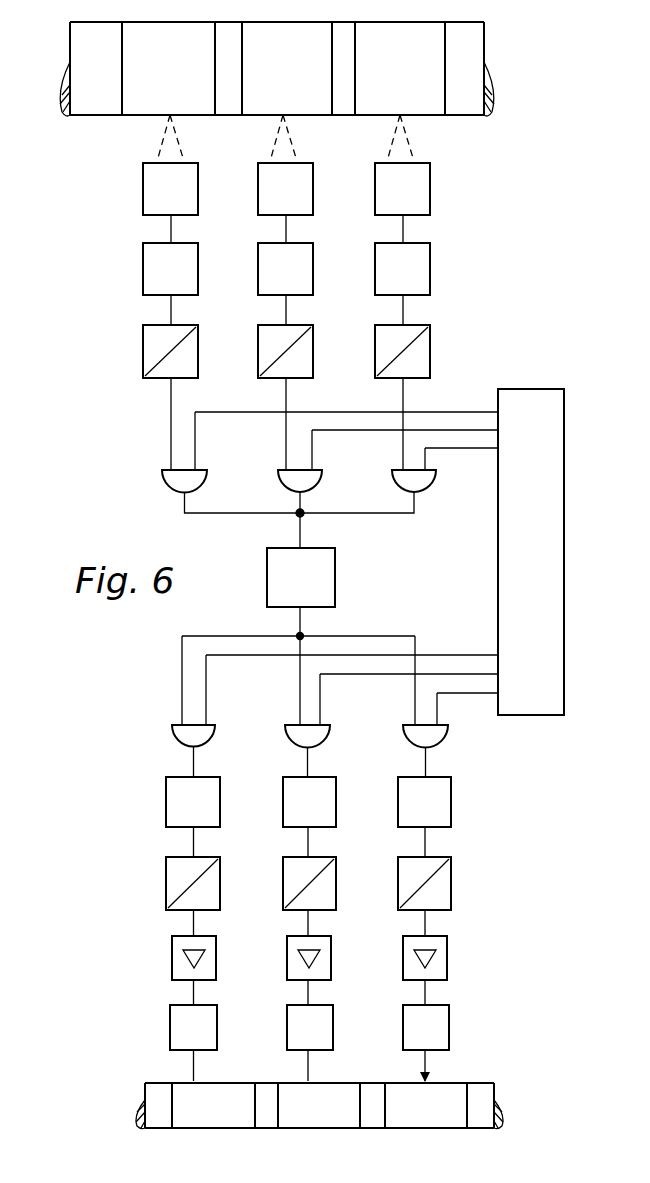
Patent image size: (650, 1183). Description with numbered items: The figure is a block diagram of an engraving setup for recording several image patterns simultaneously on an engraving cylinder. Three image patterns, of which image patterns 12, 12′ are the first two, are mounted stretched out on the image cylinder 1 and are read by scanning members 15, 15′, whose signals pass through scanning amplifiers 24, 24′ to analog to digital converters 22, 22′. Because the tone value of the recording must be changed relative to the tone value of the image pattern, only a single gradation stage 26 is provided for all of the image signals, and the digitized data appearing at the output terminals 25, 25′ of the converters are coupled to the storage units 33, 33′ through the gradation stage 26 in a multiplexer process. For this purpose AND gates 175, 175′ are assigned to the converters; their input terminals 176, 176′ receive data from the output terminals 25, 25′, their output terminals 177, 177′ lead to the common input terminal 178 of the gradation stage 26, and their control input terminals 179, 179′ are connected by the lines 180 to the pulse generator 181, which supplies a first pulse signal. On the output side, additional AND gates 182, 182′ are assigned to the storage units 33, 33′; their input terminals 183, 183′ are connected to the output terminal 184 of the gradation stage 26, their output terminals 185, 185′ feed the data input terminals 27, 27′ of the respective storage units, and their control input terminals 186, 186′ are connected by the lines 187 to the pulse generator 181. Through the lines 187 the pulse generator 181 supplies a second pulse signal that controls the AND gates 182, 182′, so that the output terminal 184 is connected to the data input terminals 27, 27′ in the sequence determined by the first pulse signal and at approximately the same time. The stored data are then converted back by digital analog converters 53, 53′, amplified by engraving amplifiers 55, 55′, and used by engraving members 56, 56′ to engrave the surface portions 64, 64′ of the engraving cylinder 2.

The image cylinder 1 is at (82, 40).
The image pattern 12 is at (143, 108).
The image pattern 12′ is at (281, 108).
The scanning member 15 is at (150, 181).
The scanning member 15′ is at (266, 181).
The scanning amplifier 24 is at (150, 263).
The scanning amplifier 24′ is at (266, 263).
The analog to digital converter 22 is at (150, 356).
The analog to digital converter 22′ is at (264, 356).
The output terminal 25 is at (171, 384).
The output terminal 25′ is at (286, 384).
The AND gate 175 is at (163, 480).
The AND gate 175′ is at (290, 488).
The input terminal 176 is at (171, 462).
The input terminal 176′ is at (286, 464).
The output terminal 177 is at (183, 500).
The output terminal 177′ is at (310, 494).
The control input terminal 179 is at (198, 462).
The control input terminal 179′ is at (313, 465).
The lines 180 is at (471, 432).
The pulse generator 181 is at (516, 402).
The input terminal 178 is at (298, 545).
The gradation stage 26 is at (328, 568).
The output terminal 184 is at (305, 611).
The lines 187 is at (478, 690).
The AND gate 182 is at (178, 735).
The AND gate 182′ is at (292, 738).
The input terminal 183 is at (180, 716).
The input terminal 183′ is at (299, 718).
The control input terminal 186 is at (206, 718).
The control input terminal 186′ is at (320, 718).
The output terminal 185 is at (190, 752).
The output terminal 185′ is at (305, 753).
The data input terminal 27 is at (190, 768).
The data input terminal 27′ is at (310, 771).
The storage unit 33 is at (174, 808).
The storage unit 33′ is at (290, 801).
The digital analog converter 53 is at (170, 866).
The digital analog converter 53′ is at (286, 862).
The engraving amplifier 55 is at (176, 948).
The engraving amplifier 55′ is at (296, 955).
The engraving member 56 is at (178, 1022).
The engraving member 56′ is at (292, 1020).
The engraving cylinder 2 is at (160, 1096).
The surface portion 64 is at (226, 1096).
The surface portion 64′ is at (338, 1096).